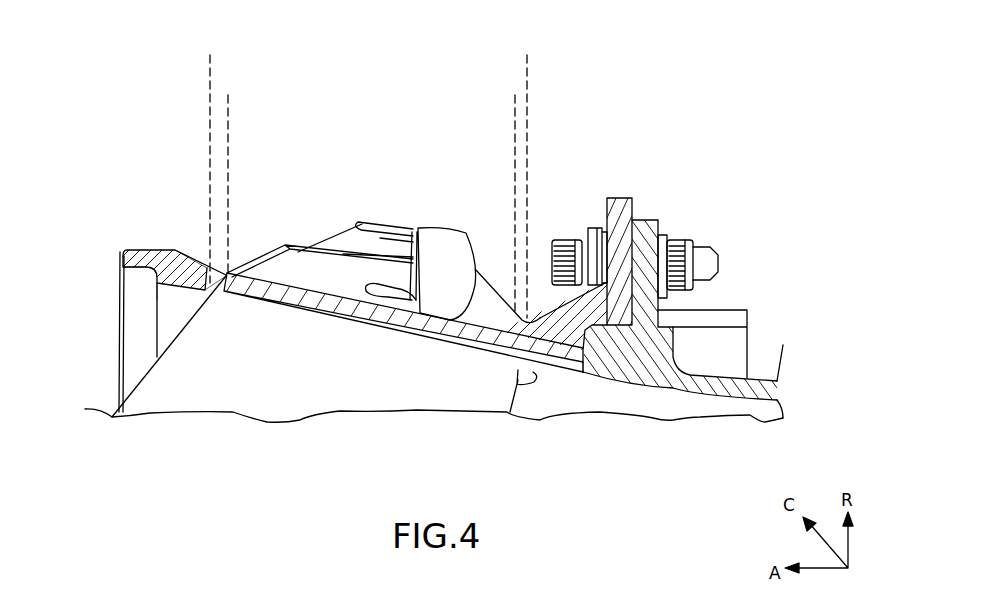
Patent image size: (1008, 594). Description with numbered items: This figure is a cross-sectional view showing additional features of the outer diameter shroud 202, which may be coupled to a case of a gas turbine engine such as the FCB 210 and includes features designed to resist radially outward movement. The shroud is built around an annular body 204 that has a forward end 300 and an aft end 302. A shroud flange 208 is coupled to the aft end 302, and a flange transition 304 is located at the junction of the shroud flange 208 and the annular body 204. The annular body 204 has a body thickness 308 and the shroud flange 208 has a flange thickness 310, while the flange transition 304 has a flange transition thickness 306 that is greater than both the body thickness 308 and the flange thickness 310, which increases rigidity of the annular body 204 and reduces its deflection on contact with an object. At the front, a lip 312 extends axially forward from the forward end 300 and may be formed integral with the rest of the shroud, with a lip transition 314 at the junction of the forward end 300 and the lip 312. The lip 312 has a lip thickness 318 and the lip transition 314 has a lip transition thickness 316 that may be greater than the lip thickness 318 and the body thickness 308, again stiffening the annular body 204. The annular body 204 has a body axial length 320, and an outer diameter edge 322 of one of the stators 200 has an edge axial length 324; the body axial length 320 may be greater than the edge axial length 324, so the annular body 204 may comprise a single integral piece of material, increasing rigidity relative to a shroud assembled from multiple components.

The stators 200 is at (282, 366).
The outer diameter shroud 202 is at (447, 339).
The annular body 204 is at (374, 290).
The shroud flange 208 is at (620, 213).
The FCB 210 is at (675, 378).
The forward end 300 is at (207, 270).
The aft end 302 is at (535, 313).
The flange transition 304 is at (583, 366).
The flange transition thickness 306 is at (562, 364).
The body thickness 308 is at (349, 307).
The flange thickness 310 is at (611, 270).
The lip 312 is at (124, 252).
The lip transition 314 is at (197, 287).
The lip transition thickness 316 is at (179, 258).
The lip thickness 318 is at (133, 265).
The body axial length 320 is at (527, 75).
The outer diameter edge 322 is at (265, 252).
The edge axial length 324 is at (515, 118).